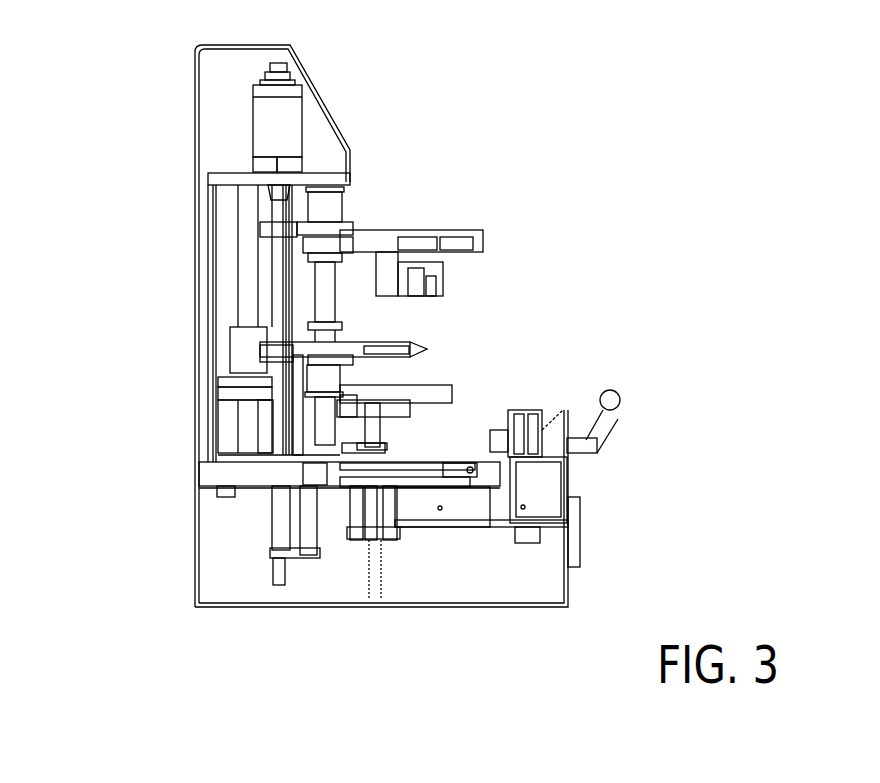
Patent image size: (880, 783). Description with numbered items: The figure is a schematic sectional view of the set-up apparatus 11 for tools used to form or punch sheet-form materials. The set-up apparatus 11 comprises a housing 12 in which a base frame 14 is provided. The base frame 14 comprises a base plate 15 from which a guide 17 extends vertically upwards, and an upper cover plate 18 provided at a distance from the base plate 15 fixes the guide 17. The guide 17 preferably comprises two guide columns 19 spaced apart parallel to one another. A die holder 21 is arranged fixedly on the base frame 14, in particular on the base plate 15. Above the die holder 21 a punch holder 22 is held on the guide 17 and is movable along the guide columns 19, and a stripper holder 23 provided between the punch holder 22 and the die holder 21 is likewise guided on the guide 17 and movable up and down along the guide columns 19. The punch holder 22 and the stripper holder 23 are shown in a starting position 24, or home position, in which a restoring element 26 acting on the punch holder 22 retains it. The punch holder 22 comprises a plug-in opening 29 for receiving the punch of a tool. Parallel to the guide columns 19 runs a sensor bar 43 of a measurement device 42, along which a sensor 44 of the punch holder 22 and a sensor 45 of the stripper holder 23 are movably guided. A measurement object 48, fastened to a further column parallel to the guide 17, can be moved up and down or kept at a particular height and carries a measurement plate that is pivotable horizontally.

The set-up apparatus 11 is at (608, 190).
The housing 12 is at (195, 102).
The base frame 14 is at (230, 520).
The base plate 15 is at (235, 479).
The guide 17 is at (298, 291).
The upper cover plate 18 is at (352, 179).
The guide columns 19 is at (327, 300).
The die holder 21 is at (423, 508).
The punch holder 22 is at (515, 235).
The stripper holder 23 is at (452, 334).
The starting position 24 is at (506, 164).
The restoring element 26 is at (300, 412).
The plug-in opening 29 is at (460, 275).
The measurement device 42 is at (170, 211).
The sensor bar 43 is at (282, 258).
The sensor 44 is at (280, 230).
The sensor 45 is at (277, 352).
The measurement object 48 is at (477, 403).